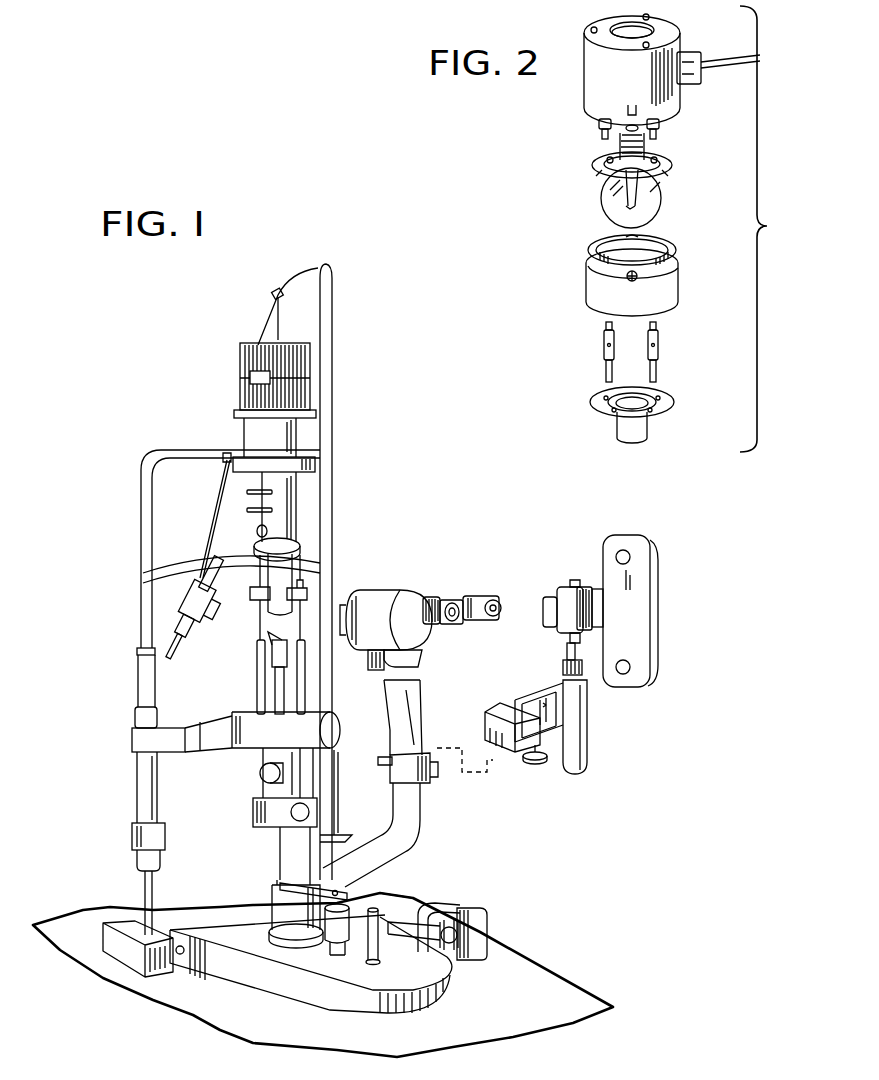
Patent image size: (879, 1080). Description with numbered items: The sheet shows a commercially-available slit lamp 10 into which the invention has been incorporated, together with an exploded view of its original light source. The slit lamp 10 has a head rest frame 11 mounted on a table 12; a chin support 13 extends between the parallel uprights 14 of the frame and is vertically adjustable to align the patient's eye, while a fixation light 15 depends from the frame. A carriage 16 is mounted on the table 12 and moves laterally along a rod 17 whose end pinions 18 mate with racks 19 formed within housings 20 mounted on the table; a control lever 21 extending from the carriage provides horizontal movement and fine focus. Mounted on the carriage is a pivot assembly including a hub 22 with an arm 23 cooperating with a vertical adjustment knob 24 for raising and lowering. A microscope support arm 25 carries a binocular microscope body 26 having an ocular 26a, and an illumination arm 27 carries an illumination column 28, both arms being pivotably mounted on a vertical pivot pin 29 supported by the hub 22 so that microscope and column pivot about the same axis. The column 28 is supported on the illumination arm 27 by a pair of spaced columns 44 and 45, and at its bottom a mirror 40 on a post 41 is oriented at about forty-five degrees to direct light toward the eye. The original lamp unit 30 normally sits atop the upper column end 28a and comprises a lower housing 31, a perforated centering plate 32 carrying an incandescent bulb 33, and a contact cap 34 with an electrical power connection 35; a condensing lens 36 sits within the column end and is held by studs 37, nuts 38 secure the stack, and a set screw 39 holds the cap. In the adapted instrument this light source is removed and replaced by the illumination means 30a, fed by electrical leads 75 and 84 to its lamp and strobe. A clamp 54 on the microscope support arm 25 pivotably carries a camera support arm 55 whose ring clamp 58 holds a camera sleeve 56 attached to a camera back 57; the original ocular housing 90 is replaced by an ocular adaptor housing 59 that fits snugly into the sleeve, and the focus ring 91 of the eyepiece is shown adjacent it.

In FIG. 1, the slit lamp 10 is at (112, 441).
In FIG. 1, the head rest frame 11 is at (196, 437).
In FIG. 1, the table 12 is at (560, 981).
In FIG. 1, the chin support 13 is at (183, 724).
In FIG. 1, the parallel uprights 14 is at (140, 521).
In FIG. 1, the fixation light 15 is at (196, 631).
In FIG. 1, the carriage 16 is at (300, 992).
In FIG. 1, the rod 17 is at (412, 897).
In FIG. 1, the pinion 18 is at (448, 920).
In FIG. 1, the rack 19 is at (445, 950).
In FIG. 1, the housing 20 is at (123, 957).
In FIG. 1, the control lever (joy stick) 21 is at (380, 942).
In FIG. 1, the hub 22 is at (273, 893).
In FIG. 1, the arm 23 is at (338, 880).
In FIG. 1, the vertical adjustment knob 24 is at (330, 940).
In FIG. 1, the microscope support arm 25 is at (422, 828).
In FIG. 1, the binocular microscope body 26 is at (380, 593).
In FIG. 1, the ocular 26a is at (497, 582).
In FIG. 1, the illumination arm 27 is at (262, 790).
In FIG. 1, the illumination column 28 is at (257, 522).
In FIG. 1, the upper column end 28a is at (300, 433).
In FIG. 1, the vertical pivot pin 29 is at (307, 794).
In FIG. 2, the original lamp unit 30 is at (693, 190).
In FIG. 1, the illumination means (first embodiment) 30a is at (220, 382).
In FIG. 2, the lower housing 31 is at (684, 281).
In FIG. 2, the perforated centering plate 32 is at (600, 170).
In FIG. 2, the incandescent bulb 33 is at (604, 211).
In FIG. 2, the contact cap 34 is at (683, 43).
In FIG. 2, the electrical power connection 35 is at (688, 86).
In FIG. 2, the condensing lens 36 is at (668, 399).
In FIG. 2, the studs 37 is at (602, 351).
In FIG. 2, the nuts 38 is at (598, 128).
In FIG. 2, the set screw 39 is at (637, 281).
In FIG. 1, the mirror 40 is at (282, 640).
In FIG. 1, the post 41 is at (275, 698).
In FIG. 1, the column 44 is at (256, 676).
In FIG. 1, the column 45 is at (306, 676).
In FIG. 1, the clamp 54 is at (432, 780).
In FIG. 1, the camera support arm 55 is at (604, 739).
In FIG. 1, the camera sleeve 56 is at (552, 595).
In FIG. 1, the camera back 57 is at (652, 609).
In FIG. 1, the ring clamp 58 is at (565, 631).
In FIG. 1, the ocular adaptor housing 59 is at (483, 623).
In FIG. 1, the electrical lead 75 is at (282, 306).
In FIG. 1, the electrical lead 84 is at (250, 374).
In FIG. 1, the original ocular housing 90 is at (450, 625).
In FIG. 1, the focus ring 91 is at (442, 597).